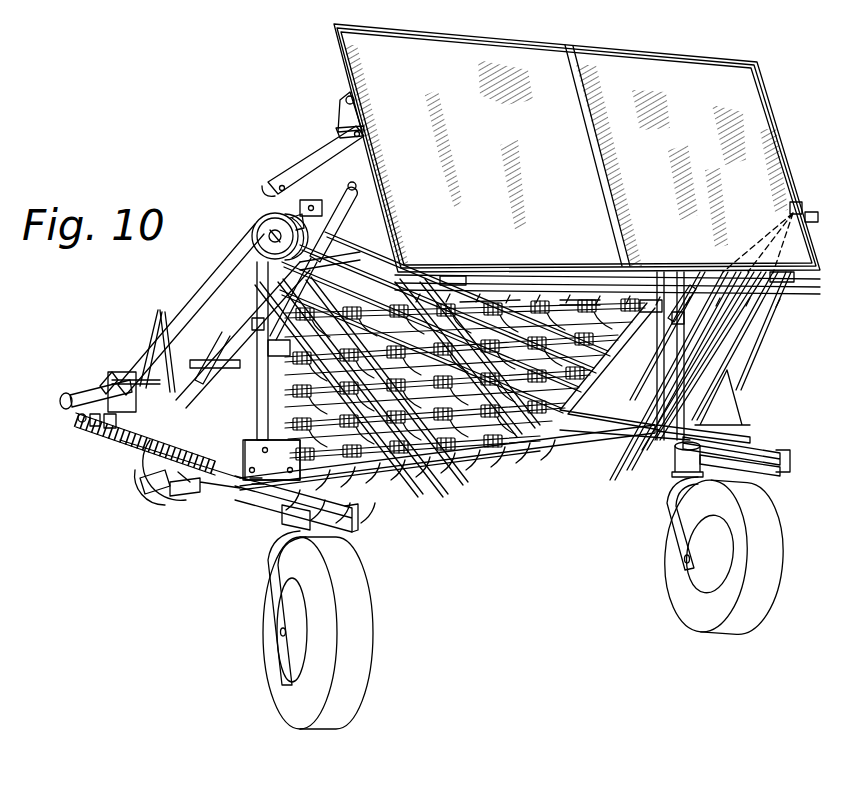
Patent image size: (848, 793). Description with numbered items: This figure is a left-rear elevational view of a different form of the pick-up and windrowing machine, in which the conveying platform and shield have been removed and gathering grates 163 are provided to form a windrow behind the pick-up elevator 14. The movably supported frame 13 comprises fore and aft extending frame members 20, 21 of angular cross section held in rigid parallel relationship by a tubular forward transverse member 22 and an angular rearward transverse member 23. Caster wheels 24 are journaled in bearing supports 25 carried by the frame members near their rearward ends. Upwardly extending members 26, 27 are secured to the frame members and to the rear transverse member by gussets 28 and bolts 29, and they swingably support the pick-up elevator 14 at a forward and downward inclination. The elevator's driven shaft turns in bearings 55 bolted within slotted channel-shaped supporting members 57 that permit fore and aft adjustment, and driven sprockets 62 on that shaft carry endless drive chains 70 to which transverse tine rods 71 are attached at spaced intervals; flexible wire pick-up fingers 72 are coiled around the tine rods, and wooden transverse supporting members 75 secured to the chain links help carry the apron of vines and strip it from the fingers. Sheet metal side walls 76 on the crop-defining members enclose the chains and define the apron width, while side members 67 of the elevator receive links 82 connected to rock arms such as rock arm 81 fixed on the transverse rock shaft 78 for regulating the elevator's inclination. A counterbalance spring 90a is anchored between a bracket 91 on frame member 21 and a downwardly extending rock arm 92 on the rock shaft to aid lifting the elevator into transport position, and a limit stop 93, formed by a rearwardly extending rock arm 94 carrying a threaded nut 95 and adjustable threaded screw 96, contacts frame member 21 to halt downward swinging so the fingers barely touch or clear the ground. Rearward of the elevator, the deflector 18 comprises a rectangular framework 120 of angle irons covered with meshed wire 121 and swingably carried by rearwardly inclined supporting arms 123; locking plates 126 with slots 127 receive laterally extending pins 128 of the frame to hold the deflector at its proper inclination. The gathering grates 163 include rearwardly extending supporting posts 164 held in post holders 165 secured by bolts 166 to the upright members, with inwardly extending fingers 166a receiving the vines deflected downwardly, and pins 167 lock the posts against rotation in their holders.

The movably supported frame 13 is at (776, 442).
The pick-up elevator 14 is at (106, 498).
The deflector 18 is at (736, 55).
The fore and aft extending frame member 20 is at (776, 458).
The fore and aft extending frame member 21 is at (350, 508).
The transverse member 22 is at (78, 400).
The transverse member 23 is at (537, 446).
The caster wheel 24 is at (358, 593).
The bearing support 25 is at (350, 532).
The upwardly extending member 26 is at (658, 354).
The upwardly extending member 27 is at (258, 281).
The gusset 28 is at (264, 480).
The bolt 29 is at (256, 488).
The bearing 55 is at (138, 483).
The channel-shaped supporting member 57 is at (140, 493).
The driven sprocket 62 is at (166, 498).
The side member 67 is at (206, 398).
The endless drive chain 70 is at (178, 489).
The transverse tine rod 71 is at (426, 488).
The pick-up finger 72 is at (498, 481).
The transverse supporting member 75 is at (341, 232).
The sheet metal side wall 76 is at (262, 232).
The transverse rock shaft 78 is at (118, 382).
The rock arm 81 is at (158, 325).
The link 82 is at (174, 330).
The counterbalance spring 90a is at (122, 441).
The bracket 91 is at (261, 459).
The downwardly extending rock arm 92 is at (80, 422).
The limit stop 93 is at (134, 368).
The rearwardly extending rock arm 94 is at (110, 372).
The threaded nut 95 is at (94, 427).
The threaded screw 96 is at (111, 429).
The rectangular framework 120 is at (610, 48).
The wire 121 is at (600, 236).
The supporting arm 123 is at (326, 152).
The locking plate 126 is at (346, 126).
The slot 127 is at (352, 97).
The laterally extending pin 128 is at (355, 101).
The gathering grate 163 is at (355, 189).
The supporting post 164 is at (348, 206).
The post holder 165 is at (286, 347).
The bolt 166 is at (255, 340).
The inwardly extending finger 166a is at (742, 352).
The pin 167 is at (258, 320).